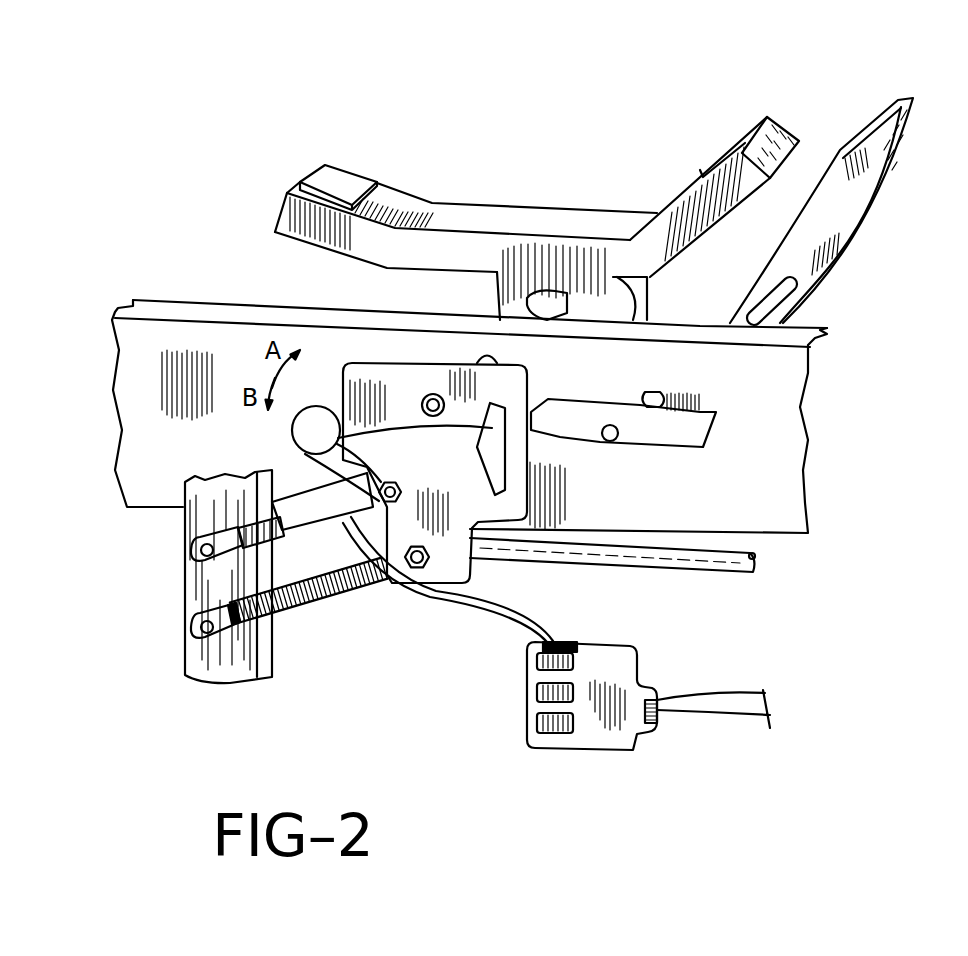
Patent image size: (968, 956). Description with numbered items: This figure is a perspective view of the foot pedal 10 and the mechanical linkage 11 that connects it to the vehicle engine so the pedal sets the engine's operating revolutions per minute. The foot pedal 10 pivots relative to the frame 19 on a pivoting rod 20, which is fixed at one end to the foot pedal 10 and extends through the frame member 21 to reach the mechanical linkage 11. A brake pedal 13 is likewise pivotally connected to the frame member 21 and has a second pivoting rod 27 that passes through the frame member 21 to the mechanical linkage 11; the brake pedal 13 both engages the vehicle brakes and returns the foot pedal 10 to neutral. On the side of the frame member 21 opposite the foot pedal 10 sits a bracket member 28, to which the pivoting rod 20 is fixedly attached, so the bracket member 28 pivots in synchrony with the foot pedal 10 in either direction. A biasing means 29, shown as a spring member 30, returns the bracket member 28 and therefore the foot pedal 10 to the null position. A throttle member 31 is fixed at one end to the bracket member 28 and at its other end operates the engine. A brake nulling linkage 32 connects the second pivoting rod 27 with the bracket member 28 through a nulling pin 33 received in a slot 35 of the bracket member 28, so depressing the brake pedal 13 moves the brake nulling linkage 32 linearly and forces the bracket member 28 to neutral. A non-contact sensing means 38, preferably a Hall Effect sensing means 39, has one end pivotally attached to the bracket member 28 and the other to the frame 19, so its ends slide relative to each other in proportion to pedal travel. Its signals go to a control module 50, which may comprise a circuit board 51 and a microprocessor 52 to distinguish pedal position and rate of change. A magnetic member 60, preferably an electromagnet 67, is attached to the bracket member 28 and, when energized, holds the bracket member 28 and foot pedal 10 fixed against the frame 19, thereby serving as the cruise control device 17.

The foot pedal 10 is at (561, 175).
The mechanical linkage 11 is at (553, 592).
The brake pedal 13 is at (873, 233).
The cruise control device 17 is at (157, 192).
The frame 19 is at (787, 357).
The pivoting rod 20 is at (552, 297).
The frame member 21 is at (765, 380).
The second pivoting rod 27 is at (650, 402).
The bracket member 28 is at (387, 467).
The biasing means 29 is at (300, 610).
The spring member 30 is at (347, 612).
The throttle member 31 is at (753, 573).
The brake nulling linkage 32 is at (697, 447).
The nulling pin 33 is at (500, 455).
The slot 35 is at (300, 438).
The non-contact sensing means 38 is at (297, 510).
The Hall Effect sensing means 39 is at (233, 557).
The control module 50 is at (610, 707).
The circuit board 51 is at (600, 738).
The microprocessor 52 is at (573, 663).
The magnetic member 60 is at (330, 393).
The electromagnet 67 is at (293, 433).